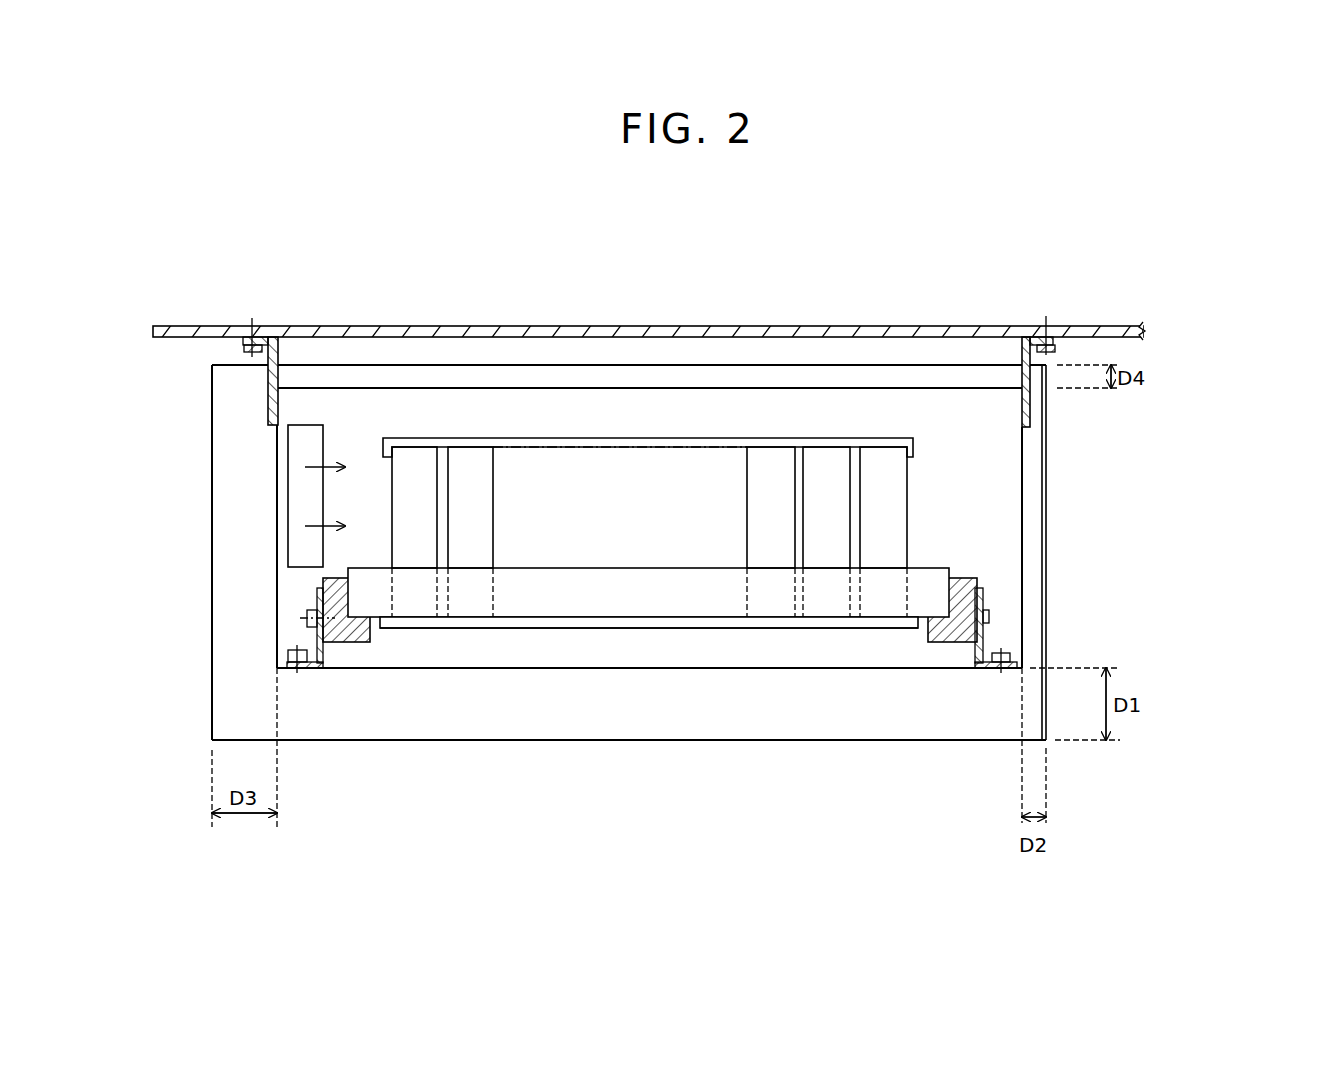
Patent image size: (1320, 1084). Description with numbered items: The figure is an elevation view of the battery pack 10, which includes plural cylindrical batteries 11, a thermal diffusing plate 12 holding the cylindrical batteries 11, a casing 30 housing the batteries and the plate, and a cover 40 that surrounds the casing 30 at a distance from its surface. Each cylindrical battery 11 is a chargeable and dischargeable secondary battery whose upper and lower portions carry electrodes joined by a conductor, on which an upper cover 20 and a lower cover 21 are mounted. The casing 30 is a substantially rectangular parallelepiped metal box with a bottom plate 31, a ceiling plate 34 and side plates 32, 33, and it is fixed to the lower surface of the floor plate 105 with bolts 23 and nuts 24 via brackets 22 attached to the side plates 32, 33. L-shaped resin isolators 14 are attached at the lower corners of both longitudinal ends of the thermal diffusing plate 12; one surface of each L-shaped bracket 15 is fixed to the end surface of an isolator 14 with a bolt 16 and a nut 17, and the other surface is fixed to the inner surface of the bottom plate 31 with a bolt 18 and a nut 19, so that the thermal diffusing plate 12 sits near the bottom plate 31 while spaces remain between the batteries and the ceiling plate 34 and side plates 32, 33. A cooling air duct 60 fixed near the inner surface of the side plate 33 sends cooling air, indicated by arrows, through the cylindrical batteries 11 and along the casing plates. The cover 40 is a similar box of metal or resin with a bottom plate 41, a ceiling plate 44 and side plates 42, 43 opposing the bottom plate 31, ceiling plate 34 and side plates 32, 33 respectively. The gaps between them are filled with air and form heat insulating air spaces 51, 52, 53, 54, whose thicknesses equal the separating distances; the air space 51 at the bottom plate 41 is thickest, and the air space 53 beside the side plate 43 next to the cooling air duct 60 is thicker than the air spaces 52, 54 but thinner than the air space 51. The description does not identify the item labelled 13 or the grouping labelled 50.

The battery pack 10 is at (1190, 487).
The cylindrical battery 11 is at (908, 490).
The thermal diffusing plate 12 is at (940, 567).
The substrate 13 is at (920, 580).
The isolator 14 is at (967, 577).
The bracket 15 is at (983, 595).
The bolt 16 is at (989, 618).
The nut 17 is at (985, 612).
The bolt 18 is at (1000, 653).
The nut 19 is at (1012, 660).
The upper cover 20 is at (915, 450).
The lower cover 21 is at (733, 628).
The bracket 22 is at (1030, 413).
The bolt 23 is at (1045, 355).
The nut 24 is at (1055, 348).
The casing 30 is at (620, 548).
The bottom plate 31 is at (895, 668).
The side plate 32 is at (1025, 497).
The side plate 33 is at (277, 607).
The ceiling plate 34 is at (775, 388).
The cover 40 is at (636, 532).
The bottom plate 41 is at (457, 740).
The side plate 42 is at (1046, 528).
The side plate 43 is at (212, 490).
The ceiling plate 44 is at (733, 365).
The housing 50 is at (627, 568).
The air space 51 is at (803, 707).
The air space 52 is at (1037, 460).
The air space 53 is at (238, 562).
The air space 54 is at (671, 375).
The cooling air duct 60 is at (296, 425).
The floor plate 105 is at (945, 323).